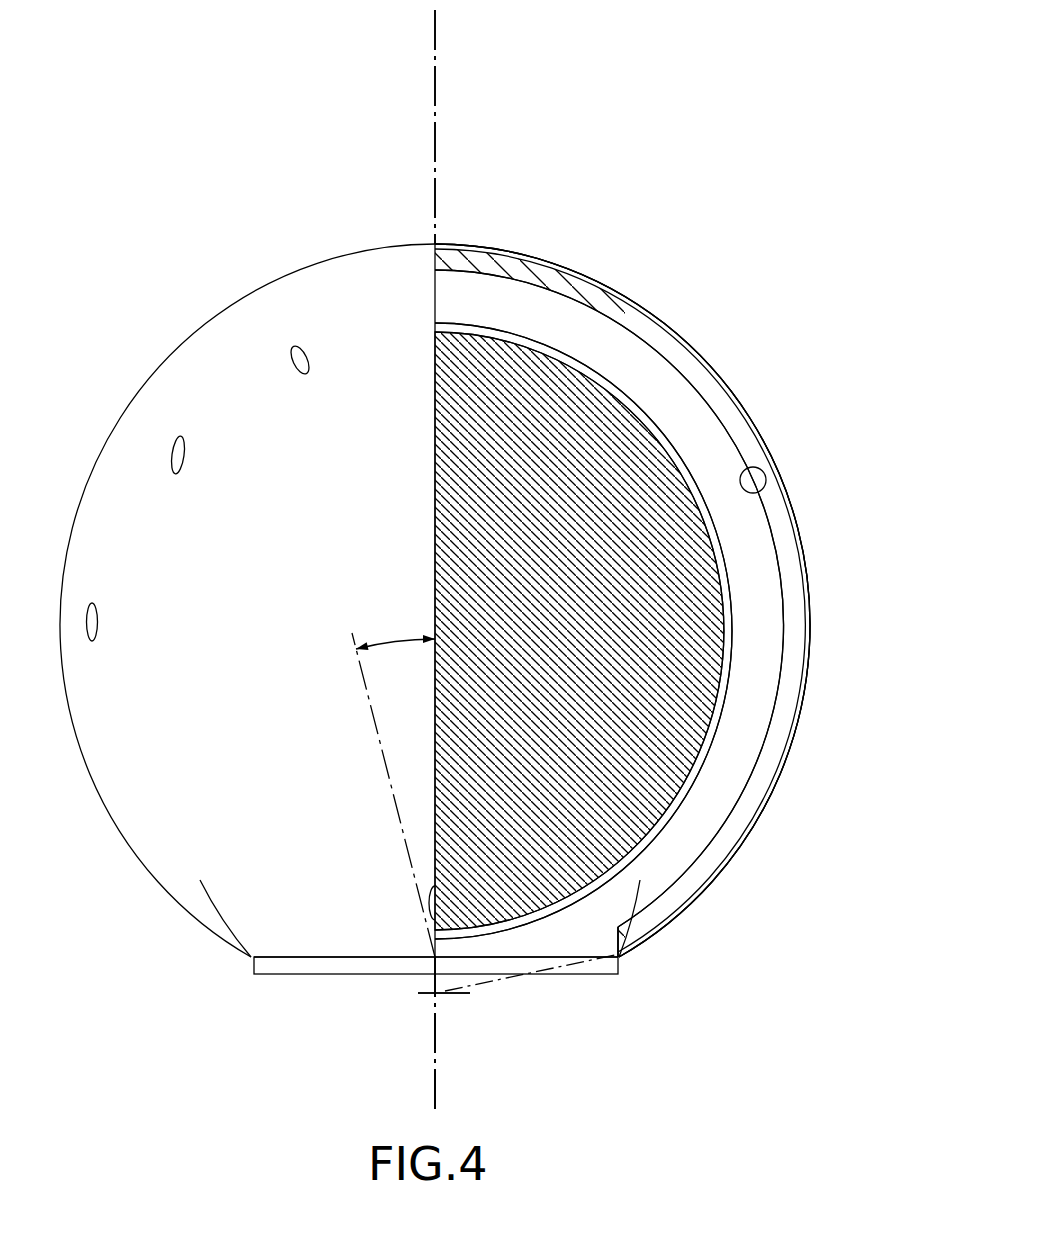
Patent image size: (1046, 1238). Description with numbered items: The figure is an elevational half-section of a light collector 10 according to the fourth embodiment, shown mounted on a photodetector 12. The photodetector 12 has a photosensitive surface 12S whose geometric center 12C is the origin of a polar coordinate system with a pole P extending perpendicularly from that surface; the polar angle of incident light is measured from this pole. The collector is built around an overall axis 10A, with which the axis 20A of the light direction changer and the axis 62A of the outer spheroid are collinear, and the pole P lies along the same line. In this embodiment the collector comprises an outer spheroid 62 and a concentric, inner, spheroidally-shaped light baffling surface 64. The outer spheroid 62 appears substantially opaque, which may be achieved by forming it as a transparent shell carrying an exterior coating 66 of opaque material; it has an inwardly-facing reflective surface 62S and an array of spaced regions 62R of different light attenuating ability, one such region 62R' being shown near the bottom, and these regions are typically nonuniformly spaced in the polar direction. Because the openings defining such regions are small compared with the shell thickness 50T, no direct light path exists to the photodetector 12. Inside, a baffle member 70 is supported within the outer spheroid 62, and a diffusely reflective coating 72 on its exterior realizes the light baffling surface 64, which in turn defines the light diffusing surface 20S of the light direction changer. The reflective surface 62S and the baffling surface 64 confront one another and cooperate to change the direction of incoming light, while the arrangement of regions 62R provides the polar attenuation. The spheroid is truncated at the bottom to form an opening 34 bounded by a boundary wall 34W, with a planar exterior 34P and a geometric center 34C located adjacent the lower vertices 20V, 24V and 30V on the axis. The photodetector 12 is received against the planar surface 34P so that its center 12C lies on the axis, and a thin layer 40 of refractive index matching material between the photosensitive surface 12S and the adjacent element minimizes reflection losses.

The light collector 10 is at (222, 163).
The overall axis 10A is at (440, 79).
The axis of revolution of the light direction changer 20A is at (522, 127).
The axis of the outer spheroid 62A is at (550, 127).
The photodetector 12 is at (300, 976).
The photosensitive surface 12S is at (282, 957).
The geometric center 12C is at (424, 975).
The light diffusing surface 20S is at (601, 380).
The lower vertex of the light direction changer 20V is at (437, 957).
The lower vertex of the polar attenuator 24V is at (352, 1033).
The lower vertex of the spheroid 30V is at (384, 1033).
The opening 34 is at (476, 897).
The geometric center of the opening 34C is at (437, 957).
The planar surface 34P is at (248, 958).
The boundary wall 34W is at (618, 938).
The layer of refractive index matching material 40 is at (623, 960).
The thickness of the spheroid 50T is at (695, 457).
The outer spheroid 62 is at (698, 352).
The inwardly-facing reflective surface 62S is at (768, 486).
The regions of different light attenuating ability 62R is at (261, 631).
The region of different light attenuating ability 62R' is at (705, 918).
The light baffling surface 64 is at (529, 347).
The coating of opaque material 66 is at (797, 523).
The baffle member 70 is at (726, 582).
The coating of diffusely reflective material 72 is at (733, 621).
The pole P is at (433, 580).